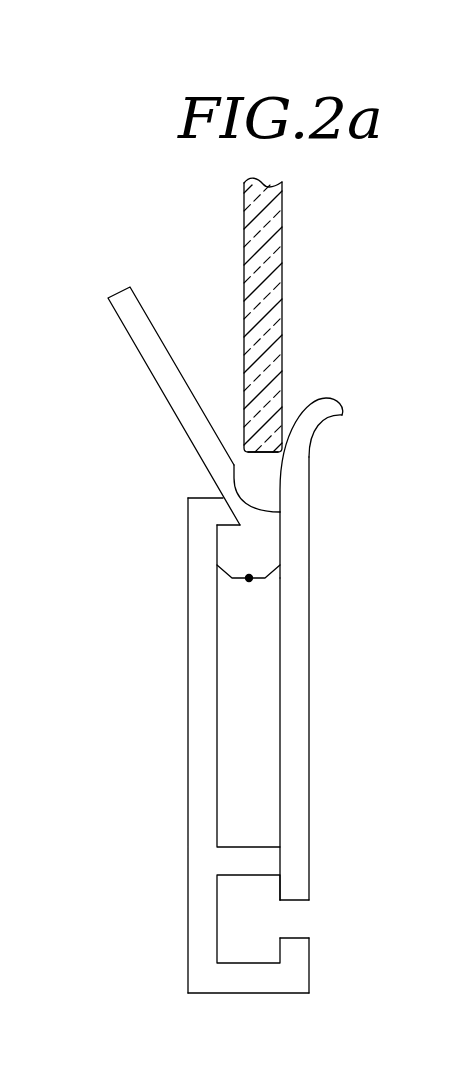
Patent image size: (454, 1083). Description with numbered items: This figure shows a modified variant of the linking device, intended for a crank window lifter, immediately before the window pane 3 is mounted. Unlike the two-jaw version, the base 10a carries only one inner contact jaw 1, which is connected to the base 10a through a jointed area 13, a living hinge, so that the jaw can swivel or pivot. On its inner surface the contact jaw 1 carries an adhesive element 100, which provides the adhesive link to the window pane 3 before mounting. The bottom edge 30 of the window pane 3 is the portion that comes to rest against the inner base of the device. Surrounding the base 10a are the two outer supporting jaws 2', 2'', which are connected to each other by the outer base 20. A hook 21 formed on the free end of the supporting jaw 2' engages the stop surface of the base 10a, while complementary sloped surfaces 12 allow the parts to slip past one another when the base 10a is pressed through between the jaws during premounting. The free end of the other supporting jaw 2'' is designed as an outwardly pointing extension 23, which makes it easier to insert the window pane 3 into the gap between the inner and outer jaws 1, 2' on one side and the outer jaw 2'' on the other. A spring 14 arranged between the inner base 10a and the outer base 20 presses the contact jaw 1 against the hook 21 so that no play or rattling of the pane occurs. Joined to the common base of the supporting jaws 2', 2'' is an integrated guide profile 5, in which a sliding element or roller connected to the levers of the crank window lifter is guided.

The window pane 3 is at (247, 223).
The adhesive element 100 is at (171, 385).
The inner contact jaw 1 is at (187, 412).
The curved retaining lip 23 is at (328, 413).
The bottom edge of the window pane 30 is at (293, 458).
The jointed area 13 is at (196, 484).
The hook 21 is at (208, 512).
The outer supporting jaw 2' is at (175, 745).
The base 10a is at (270, 540).
The sloped surface 12 is at (214, 581).
The spring 14 is at (262, 589).
The outer supporting jaw 2'' is at (332, 725).
The base 20 is at (258, 862).
The guide profile 5 is at (203, 922).